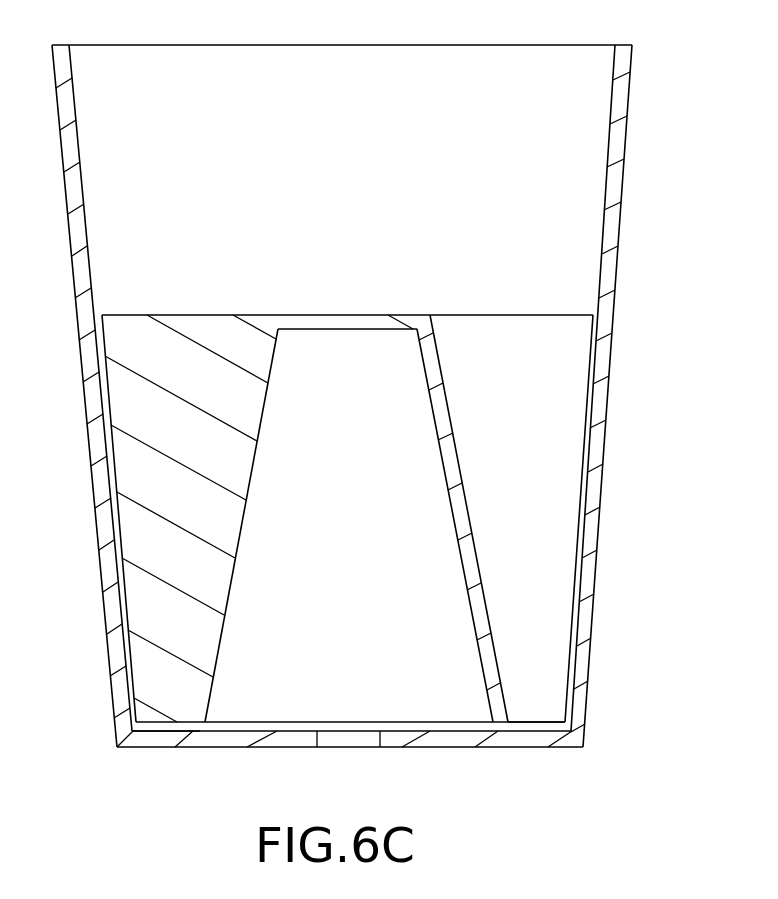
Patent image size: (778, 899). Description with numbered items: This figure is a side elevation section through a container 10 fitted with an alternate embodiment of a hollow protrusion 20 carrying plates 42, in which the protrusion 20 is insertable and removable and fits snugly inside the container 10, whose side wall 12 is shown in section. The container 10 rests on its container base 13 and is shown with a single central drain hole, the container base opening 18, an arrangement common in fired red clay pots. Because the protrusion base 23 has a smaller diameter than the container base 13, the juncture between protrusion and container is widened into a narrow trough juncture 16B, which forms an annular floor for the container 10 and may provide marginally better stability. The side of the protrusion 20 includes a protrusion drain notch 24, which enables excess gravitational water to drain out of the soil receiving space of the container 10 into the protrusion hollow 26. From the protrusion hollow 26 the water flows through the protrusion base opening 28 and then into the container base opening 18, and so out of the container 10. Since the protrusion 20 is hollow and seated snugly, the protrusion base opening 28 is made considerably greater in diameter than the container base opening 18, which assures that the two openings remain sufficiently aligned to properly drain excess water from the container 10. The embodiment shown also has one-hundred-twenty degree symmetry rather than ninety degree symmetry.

The container 10 is at (594, 45).
The side wall 12 is at (620, 222).
The container base 13 is at (568, 748).
The container base opening 18 is at (349, 738).
The protrusion base 23 is at (190, 725).
The plates 42 is at (129, 315).
The protrusion base opening 28 is at (254, 720).
The protrusion hollow 26 is at (297, 415).
The protrusion 20 is at (415, 315).
The protrusion drain notch 24 is at (497, 680).
The trough juncture 16B is at (548, 698).